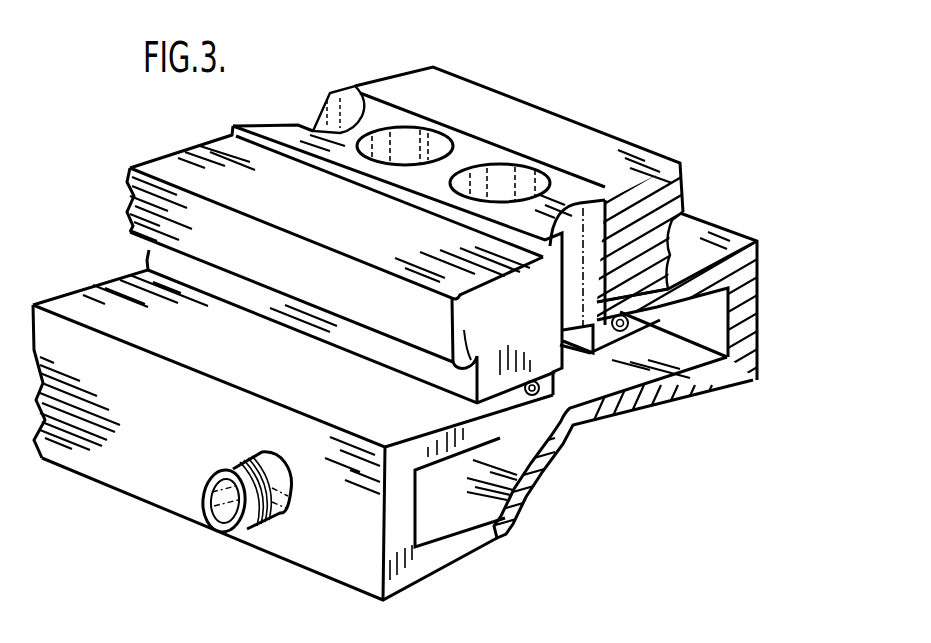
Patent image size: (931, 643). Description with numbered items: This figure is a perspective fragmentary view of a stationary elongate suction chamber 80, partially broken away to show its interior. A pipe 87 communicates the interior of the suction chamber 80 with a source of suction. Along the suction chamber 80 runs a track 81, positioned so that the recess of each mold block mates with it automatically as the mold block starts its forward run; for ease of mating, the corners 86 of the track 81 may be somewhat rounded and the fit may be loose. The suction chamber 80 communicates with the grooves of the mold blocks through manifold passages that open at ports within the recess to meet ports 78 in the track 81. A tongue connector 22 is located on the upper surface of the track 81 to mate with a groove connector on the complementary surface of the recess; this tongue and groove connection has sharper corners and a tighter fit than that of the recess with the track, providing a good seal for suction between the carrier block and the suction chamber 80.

The tongue connector 22 is at (573, 178).
The ports 78 is at (488, 170).
The corners of track 86 is at (450, 300).
The track 81 is at (470, 382).
The pipe 87 is at (231, 535).
The suction chamber 80 is at (748, 385).